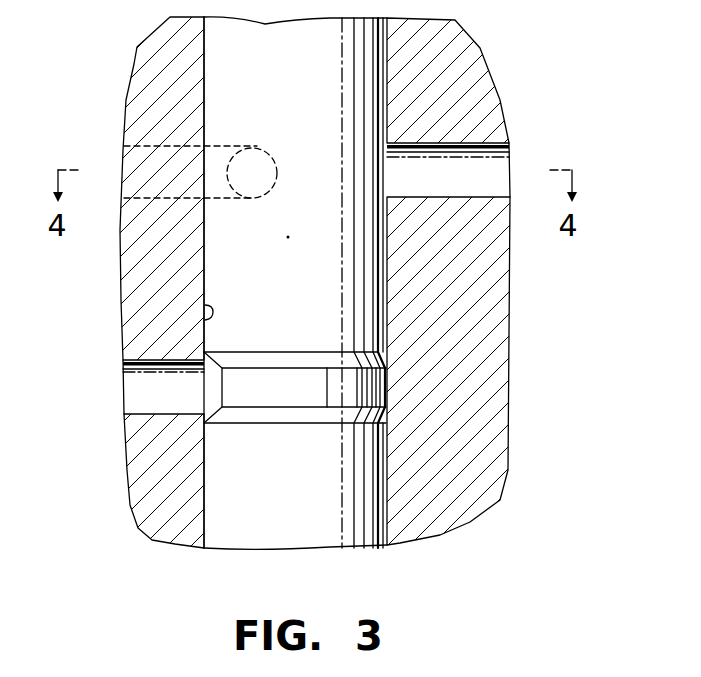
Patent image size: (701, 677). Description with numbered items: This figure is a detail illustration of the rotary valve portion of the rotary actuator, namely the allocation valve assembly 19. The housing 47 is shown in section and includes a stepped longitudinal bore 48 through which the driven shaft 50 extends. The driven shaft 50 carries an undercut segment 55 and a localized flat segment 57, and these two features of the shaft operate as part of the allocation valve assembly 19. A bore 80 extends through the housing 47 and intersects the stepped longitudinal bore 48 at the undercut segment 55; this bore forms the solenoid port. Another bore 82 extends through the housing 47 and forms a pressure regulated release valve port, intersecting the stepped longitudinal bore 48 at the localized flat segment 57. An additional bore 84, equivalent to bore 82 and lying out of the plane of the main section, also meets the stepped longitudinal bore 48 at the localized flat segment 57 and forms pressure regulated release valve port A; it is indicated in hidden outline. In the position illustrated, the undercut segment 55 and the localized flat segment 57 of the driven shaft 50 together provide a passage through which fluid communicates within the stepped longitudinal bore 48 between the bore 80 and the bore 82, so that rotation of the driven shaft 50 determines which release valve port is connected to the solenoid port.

The allocation valve assembly 19 is at (542, 263).
The housing 47 is at (157, 480).
The stepped longitudinal bore 48 is at (205, 305).
The driven shaft 50 is at (392, 487).
The undercut segment 55 is at (360, 383).
The localized flat segment 57 is at (383, 292).
The bore 80 is at (158, 413).
The bore 82 is at (497, 150).
The bore 84 is at (125, 149).